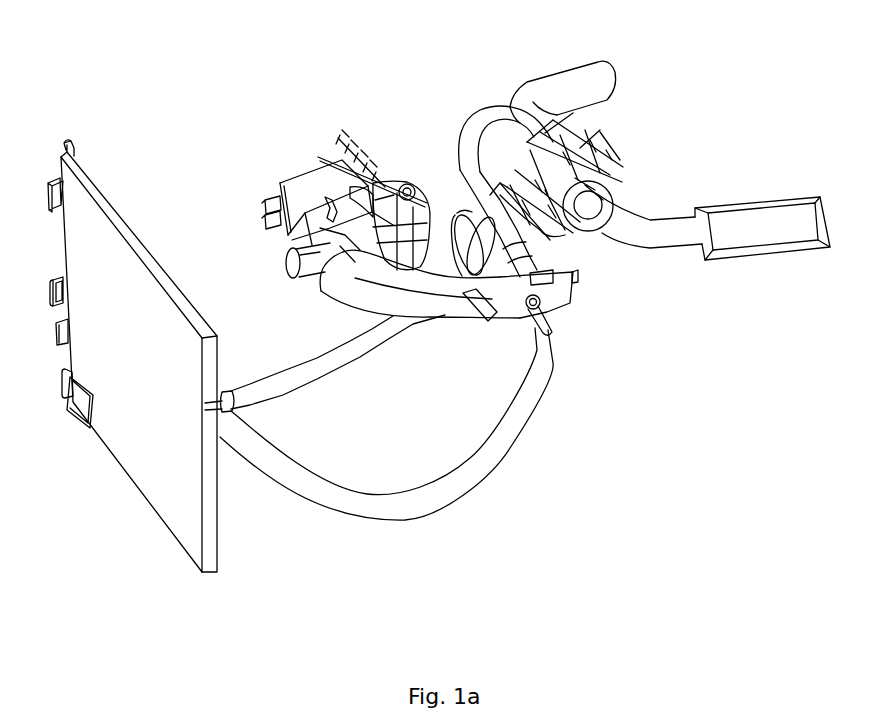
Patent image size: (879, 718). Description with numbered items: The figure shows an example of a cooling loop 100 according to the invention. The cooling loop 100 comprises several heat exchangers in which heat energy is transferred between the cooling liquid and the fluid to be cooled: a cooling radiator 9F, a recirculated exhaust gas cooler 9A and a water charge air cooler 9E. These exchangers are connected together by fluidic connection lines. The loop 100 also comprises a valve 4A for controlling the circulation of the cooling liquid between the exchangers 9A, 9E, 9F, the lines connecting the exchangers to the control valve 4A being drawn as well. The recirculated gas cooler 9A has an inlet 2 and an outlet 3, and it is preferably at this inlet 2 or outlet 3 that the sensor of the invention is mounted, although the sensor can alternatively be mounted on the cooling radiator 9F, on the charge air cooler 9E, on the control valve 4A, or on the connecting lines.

The cooling loop 100 is at (200, 102).
The cooling radiator 9F is at (143, 427).
The water charge air cooler 9E is at (318, 157).
The outlet 3 is at (475, 100).
The recirculated exhaust gas cooler 9A is at (627, 152).
The inlet 2 is at (607, 255).
The valve 4A is at (549, 364).